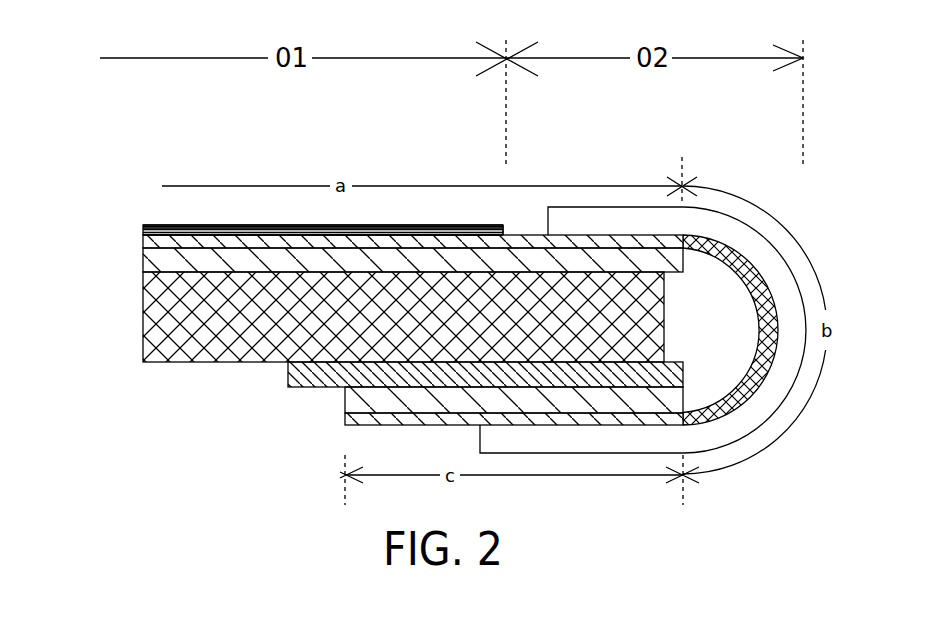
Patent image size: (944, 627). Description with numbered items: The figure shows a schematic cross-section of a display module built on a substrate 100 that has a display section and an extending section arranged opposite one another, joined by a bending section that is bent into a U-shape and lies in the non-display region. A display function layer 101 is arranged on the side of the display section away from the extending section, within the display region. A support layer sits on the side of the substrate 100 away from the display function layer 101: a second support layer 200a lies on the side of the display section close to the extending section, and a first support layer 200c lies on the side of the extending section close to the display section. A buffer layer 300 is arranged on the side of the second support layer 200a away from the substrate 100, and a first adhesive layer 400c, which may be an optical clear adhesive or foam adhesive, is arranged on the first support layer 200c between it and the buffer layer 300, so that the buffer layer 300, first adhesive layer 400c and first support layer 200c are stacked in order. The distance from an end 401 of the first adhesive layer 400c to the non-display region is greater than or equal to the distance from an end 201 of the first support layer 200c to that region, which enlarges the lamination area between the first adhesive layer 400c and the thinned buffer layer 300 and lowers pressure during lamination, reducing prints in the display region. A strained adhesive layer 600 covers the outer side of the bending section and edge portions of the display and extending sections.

The substrate 100 is at (165, 237).
The display function layer 101 is at (167, 228).
The second support layer 200a is at (190, 266).
The first support layer 200c is at (345, 413).
The end of the first support layer 201 is at (372, 400).
The buffer layer 300 is at (187, 323).
The first adhesive layer 400c is at (343, 399).
The end of the first adhesive layer 401 is at (287, 373).
The strained adhesive layer 600 is at (788, 300).